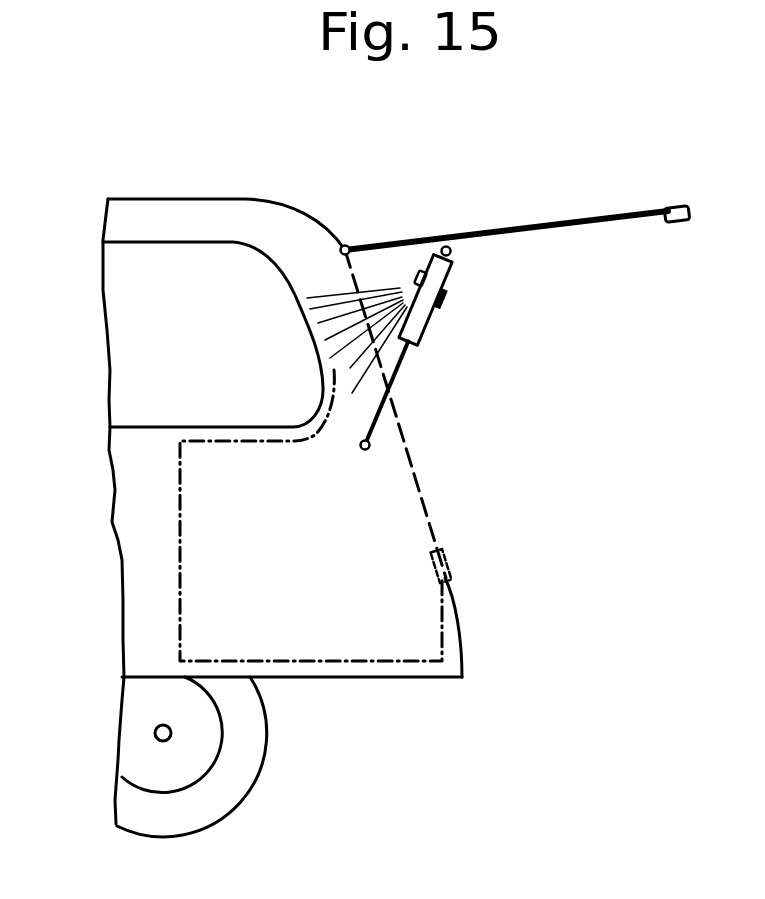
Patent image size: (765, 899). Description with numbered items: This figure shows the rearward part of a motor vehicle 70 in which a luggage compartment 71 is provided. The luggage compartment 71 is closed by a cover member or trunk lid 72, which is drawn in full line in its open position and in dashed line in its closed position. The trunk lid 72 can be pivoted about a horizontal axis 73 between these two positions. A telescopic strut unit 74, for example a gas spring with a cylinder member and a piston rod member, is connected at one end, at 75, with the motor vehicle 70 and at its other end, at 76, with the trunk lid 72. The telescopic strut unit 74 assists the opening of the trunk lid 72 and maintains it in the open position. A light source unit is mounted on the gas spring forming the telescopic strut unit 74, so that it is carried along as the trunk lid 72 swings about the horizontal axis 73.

The rearward part of a motor vehicle 70 is at (112, 523).
The luggage compartment 71 is at (312, 598).
The trunk lid 72 is at (581, 218).
The horizontal axis 73 is at (346, 245).
The telescopic strut unit 74 is at (420, 351).
The connection with the motor vehicle 75 is at (363, 450).
The connection with the cover member 76 is at (452, 252).